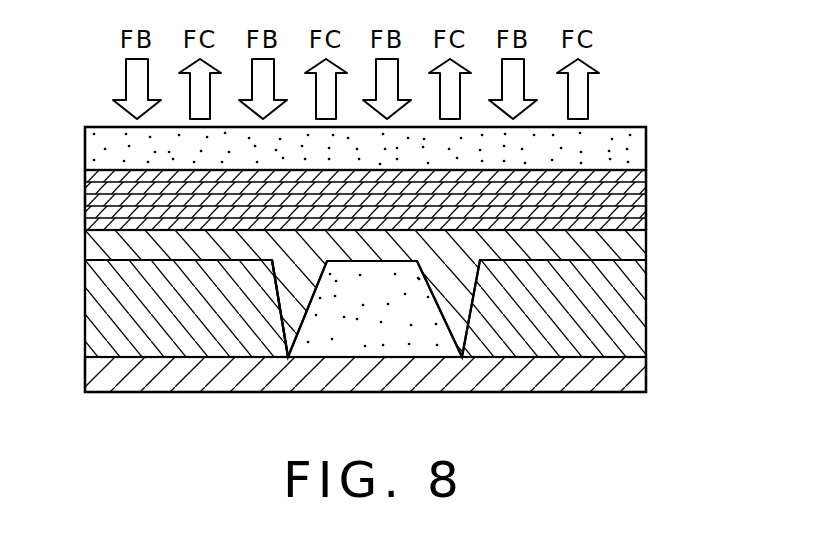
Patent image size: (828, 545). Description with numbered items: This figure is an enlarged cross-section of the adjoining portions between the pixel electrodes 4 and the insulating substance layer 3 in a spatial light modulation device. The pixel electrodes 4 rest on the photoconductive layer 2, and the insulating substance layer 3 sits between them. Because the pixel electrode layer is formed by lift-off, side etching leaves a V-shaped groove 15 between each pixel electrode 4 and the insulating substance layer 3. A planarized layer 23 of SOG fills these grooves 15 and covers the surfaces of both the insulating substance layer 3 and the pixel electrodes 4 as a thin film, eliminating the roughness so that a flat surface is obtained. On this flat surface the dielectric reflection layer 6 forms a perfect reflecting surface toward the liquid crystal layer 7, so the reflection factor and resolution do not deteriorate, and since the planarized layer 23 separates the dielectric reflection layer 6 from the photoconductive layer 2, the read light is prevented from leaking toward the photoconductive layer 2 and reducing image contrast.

The photoconductive layer 2 is at (632, 378).
The insulating substance layer 3 is at (381, 332).
The pixel electrode 4 is at (135, 320).
The dielectric reflection layer 6 is at (632, 200).
The liquid crystal layer 7 is at (625, 152).
The V-shaped groove 15 is at (303, 316).
The planarized layer 23 is at (632, 248).